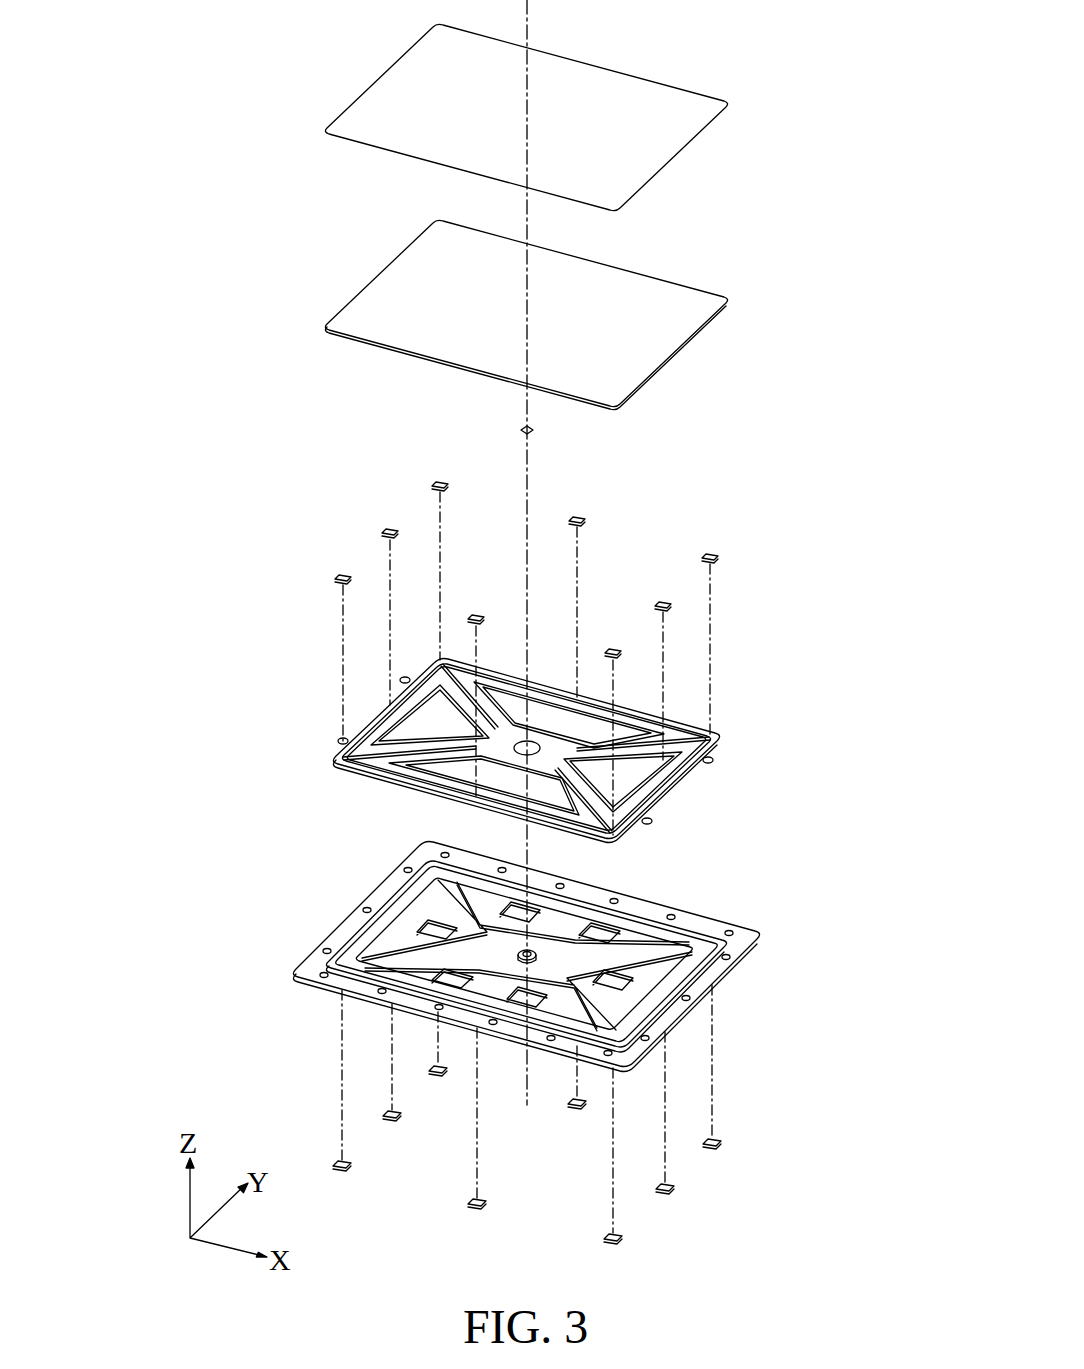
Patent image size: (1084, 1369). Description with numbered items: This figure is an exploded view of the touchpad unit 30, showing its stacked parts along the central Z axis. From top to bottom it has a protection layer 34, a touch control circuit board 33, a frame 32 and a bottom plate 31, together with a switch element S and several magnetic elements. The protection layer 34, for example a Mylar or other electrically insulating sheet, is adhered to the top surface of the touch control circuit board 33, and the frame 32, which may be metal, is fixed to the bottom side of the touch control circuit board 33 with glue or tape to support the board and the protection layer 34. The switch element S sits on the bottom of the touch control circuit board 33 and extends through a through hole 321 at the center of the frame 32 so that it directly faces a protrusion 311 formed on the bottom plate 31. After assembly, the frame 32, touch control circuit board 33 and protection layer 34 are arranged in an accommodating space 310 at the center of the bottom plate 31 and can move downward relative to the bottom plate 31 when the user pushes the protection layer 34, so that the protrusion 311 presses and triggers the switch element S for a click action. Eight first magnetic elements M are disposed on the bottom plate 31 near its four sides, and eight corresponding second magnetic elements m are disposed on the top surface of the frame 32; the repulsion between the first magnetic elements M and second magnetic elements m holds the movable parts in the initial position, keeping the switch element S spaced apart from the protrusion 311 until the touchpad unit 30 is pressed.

The touchpad unit 30 is at (348, 72).
The protection layer 34 is at (697, 105).
The touch control circuit board 33 is at (697, 302).
The switch element S is at (519, 430).
The second magnetic element m is at (340, 576).
The frame 32 is at (708, 763).
The through hole 321 is at (528, 756).
The bottom plate 31 is at (760, 934).
The accommodating space 310 is at (425, 930).
The protrusion 311 is at (534, 949).
The first magnetic element M is at (338, 1163).